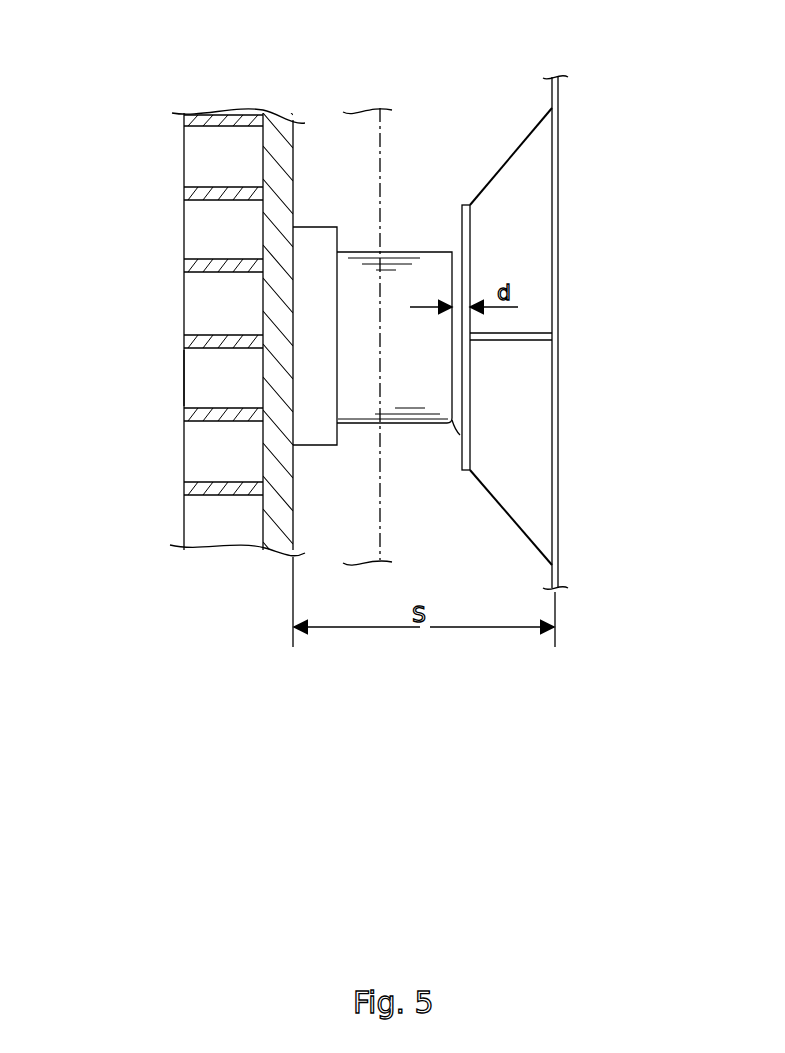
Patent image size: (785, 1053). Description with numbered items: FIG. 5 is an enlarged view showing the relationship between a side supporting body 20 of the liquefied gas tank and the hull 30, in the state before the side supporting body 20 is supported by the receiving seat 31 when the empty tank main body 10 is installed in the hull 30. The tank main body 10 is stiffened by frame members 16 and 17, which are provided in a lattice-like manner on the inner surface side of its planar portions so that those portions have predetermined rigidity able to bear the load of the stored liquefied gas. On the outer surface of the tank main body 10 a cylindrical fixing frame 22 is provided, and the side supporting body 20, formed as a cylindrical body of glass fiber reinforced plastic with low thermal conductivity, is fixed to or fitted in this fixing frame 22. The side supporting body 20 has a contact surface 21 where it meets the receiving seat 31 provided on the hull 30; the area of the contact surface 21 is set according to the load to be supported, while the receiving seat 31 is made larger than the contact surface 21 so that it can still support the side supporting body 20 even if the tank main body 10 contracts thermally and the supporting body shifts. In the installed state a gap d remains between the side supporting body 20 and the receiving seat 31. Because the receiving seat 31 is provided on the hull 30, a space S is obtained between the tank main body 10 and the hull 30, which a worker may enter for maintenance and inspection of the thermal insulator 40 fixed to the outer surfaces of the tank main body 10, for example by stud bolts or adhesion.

The tank main body 10 is at (298, 180).
The frame member 16 is at (217, 183).
The frame member 17 is at (208, 375).
The side supporting body 20 is at (417, 250).
The contact surface 21 is at (459, 424).
The fixing frame 22 is at (315, 445).
The hull 30 is at (561, 163).
The receiving seat 31 is at (460, 233).
The thermal insulator 40 is at (381, 165).